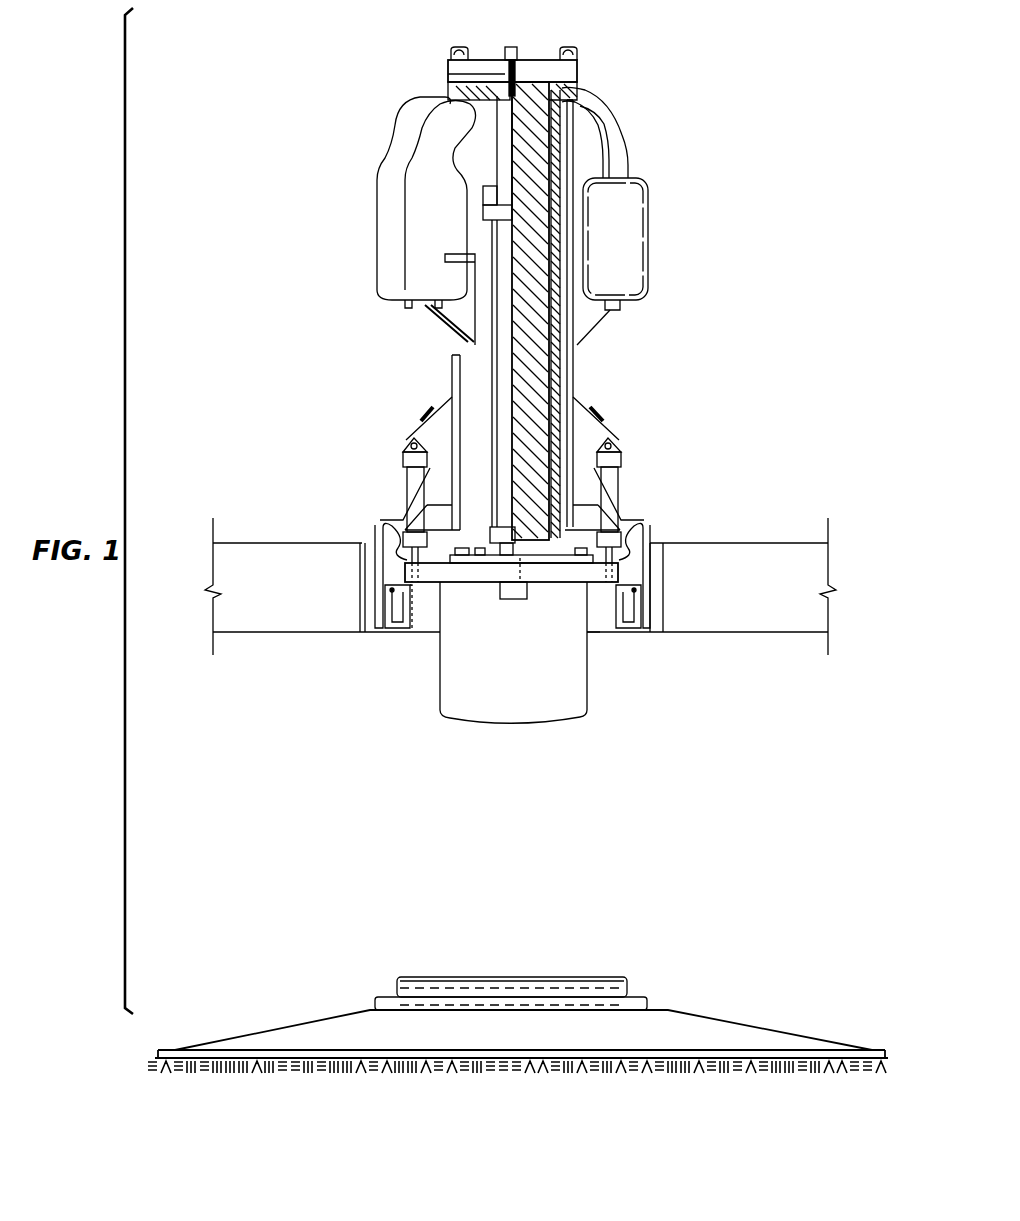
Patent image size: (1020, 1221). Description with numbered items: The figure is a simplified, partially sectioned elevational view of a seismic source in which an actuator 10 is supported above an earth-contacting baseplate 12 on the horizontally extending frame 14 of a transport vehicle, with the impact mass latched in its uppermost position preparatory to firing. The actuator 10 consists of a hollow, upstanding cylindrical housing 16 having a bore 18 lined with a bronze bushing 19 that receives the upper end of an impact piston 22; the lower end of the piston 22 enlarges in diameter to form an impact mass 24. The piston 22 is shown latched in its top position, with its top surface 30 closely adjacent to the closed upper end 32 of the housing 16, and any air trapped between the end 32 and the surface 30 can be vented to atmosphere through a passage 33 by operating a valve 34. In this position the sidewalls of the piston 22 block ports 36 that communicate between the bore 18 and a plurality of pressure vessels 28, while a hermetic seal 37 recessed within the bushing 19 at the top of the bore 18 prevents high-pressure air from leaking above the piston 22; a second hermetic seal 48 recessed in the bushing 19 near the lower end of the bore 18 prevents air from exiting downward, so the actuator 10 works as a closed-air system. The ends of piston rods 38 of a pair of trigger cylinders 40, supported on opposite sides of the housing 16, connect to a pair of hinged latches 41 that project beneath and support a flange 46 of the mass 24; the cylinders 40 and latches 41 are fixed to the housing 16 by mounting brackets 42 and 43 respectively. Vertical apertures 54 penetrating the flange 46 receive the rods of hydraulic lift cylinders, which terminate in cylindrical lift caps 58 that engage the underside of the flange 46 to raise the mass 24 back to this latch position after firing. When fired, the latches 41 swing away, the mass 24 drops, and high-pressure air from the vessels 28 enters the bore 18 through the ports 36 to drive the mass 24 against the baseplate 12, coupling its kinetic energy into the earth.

The actuator 10 is at (690, 210).
The baseplate 12 is at (704, 1026).
The frame 14 is at (252, 556).
The cylindrical housing 16 is at (450, 352).
The bore 18 is at (556, 168).
The bronze bushing 19 is at (574, 380).
The impact piston 22 is at (503, 94).
The impact mass 24 is at (436, 694).
The pressure vessels 28 is at (400, 260).
The top surface 30 is at (496, 325).
The closed upper end 32 is at (487, 60).
The passage 33 is at (448, 76).
The valve 34 is at (513, 47).
The ports 36 is at (592, 110).
The hermetic seal 37 is at (568, 96).
The piston rods 38 is at (380, 526).
The trigger cylinders 40 is at (408, 478).
The hinged latches 41 is at (396, 630).
The mounting brackets 42 is at (592, 434).
The mounting brackets 43 is at (626, 528).
The flange 46 is at (548, 572).
The hermetic seal 48 is at (590, 632).
The vertical apertures 54 is at (512, 574).
The cylindrical lift caps 58 is at (514, 600).